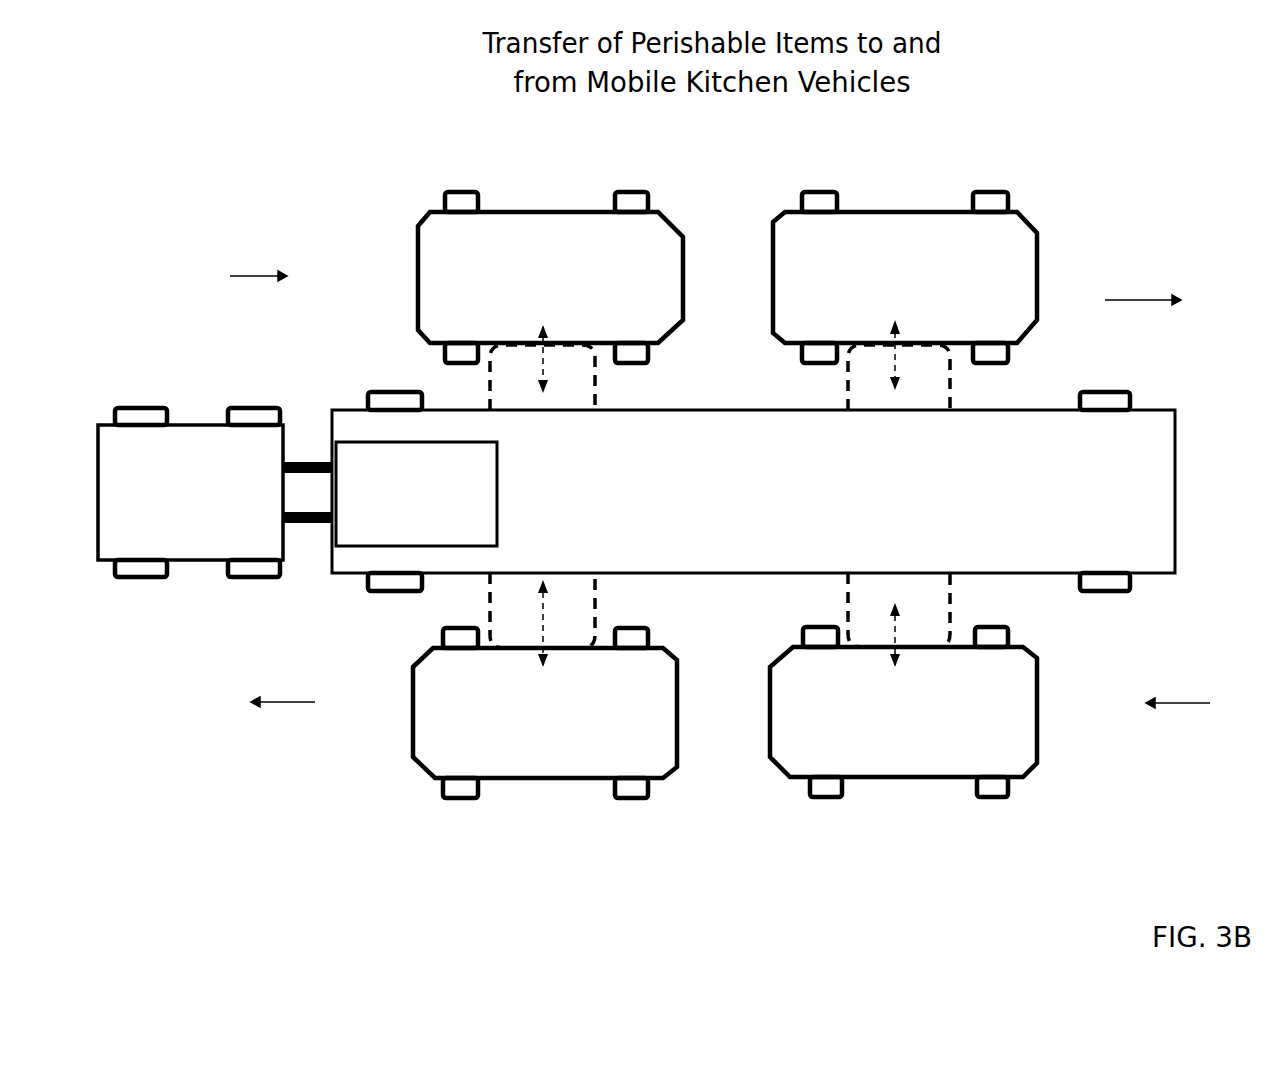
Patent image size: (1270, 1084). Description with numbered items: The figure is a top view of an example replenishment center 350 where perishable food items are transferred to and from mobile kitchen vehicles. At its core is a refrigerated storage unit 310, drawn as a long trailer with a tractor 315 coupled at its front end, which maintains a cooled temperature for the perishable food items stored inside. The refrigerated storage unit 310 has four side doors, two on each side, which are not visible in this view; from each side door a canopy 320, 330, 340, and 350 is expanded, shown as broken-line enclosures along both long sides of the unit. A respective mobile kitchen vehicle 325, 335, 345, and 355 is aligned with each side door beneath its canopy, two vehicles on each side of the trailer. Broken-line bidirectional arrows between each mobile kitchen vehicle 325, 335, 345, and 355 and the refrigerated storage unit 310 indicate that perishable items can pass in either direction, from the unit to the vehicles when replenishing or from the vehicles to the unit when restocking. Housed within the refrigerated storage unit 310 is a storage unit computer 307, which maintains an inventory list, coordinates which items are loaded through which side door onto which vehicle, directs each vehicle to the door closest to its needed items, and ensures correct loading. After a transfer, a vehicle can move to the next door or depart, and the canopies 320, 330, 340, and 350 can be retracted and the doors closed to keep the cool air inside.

The replenishment center 350 is at (490, 590).
The canopy 330 is at (484, 394).
The canopy 320 is at (952, 391).
The canopy 340 is at (952, 592).
The mobile kitchen vehicle 335 is at (550, 277).
The mobile kitchen vehicle 325 is at (905, 277).
The mobile kitchen vehicle 355 is at (545, 713).
The mobile kitchen vehicle 345 is at (903, 712).
The tractor 315 is at (215, 492).
The refrigerated storage unit 310 is at (753, 491).
The storage unit computer 307 is at (416, 494).